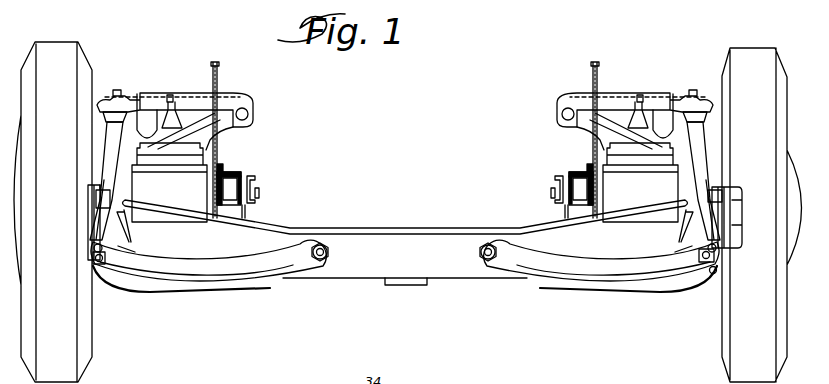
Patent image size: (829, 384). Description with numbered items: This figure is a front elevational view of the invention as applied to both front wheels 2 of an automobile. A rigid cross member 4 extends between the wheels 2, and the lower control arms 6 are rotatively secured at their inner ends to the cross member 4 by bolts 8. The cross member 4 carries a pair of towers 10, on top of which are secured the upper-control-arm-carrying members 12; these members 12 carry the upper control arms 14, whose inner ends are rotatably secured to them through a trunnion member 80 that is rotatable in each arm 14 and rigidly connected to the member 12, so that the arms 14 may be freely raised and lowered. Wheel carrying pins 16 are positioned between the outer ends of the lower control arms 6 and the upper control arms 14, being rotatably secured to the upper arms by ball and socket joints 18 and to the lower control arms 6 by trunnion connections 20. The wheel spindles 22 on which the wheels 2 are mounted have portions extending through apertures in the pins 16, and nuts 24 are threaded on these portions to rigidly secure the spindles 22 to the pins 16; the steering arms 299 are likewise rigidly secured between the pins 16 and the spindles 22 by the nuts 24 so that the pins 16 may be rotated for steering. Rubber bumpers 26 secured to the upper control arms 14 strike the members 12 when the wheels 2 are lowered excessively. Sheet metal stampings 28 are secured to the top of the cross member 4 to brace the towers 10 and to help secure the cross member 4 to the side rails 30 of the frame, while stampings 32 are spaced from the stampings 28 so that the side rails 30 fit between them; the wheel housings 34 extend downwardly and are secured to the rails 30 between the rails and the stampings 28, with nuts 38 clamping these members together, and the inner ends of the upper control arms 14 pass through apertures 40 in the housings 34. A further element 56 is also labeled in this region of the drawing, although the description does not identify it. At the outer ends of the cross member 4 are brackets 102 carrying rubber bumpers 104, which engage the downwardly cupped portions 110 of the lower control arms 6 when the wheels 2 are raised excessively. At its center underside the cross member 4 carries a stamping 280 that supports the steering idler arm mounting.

The front wheels 2 is at (68, 62).
The cross member 4 is at (450, 272).
The lower control arms 6 is at (280, 273).
The bolts 8 is at (324, 246).
The towers 10 is at (206, 150).
The upper-control-arm-carrying members 12 is at (217, 135).
The upper control arms 14 is at (238, 101).
The wheel carrying pins 16 is at (108, 160).
The ball and socket joints 18 is at (90, 116).
The trunnion connections 20 is at (100, 285).
The wheel spindles 22 is at (95, 230).
The nuts 24 is at (100, 190).
The rubber bumpers 26 is at (150, 120).
The sheet metal stampings 28 is at (205, 192).
The side rails 30 is at (243, 174).
The stampings 32 is at (247, 212).
The wheel housings 34 is at (225, 167).
The nuts 38 is at (256, 186).
The apertures 40 is at (216, 88).
The nut 56 is at (260, 191).
The trunnion member 80 is at (247, 116).
The brackets 102 is at (128, 234).
The rubber bumpers 104 is at (132, 251).
The downwardly cupped portions 110 is at (128, 292).
The stamping 280 is at (393, 285).
The steering arms 299 is at (718, 270).